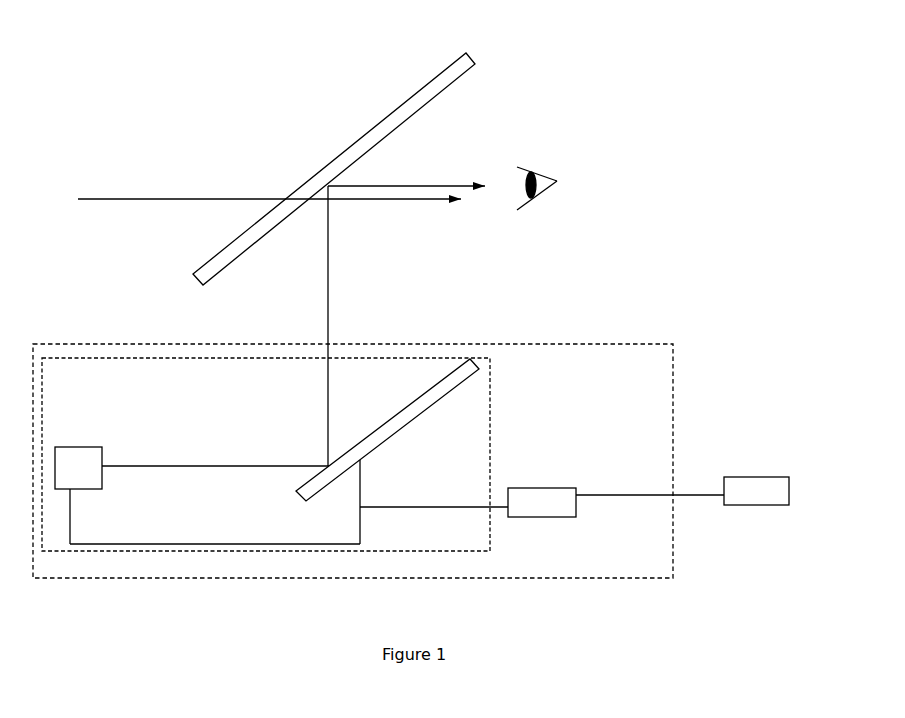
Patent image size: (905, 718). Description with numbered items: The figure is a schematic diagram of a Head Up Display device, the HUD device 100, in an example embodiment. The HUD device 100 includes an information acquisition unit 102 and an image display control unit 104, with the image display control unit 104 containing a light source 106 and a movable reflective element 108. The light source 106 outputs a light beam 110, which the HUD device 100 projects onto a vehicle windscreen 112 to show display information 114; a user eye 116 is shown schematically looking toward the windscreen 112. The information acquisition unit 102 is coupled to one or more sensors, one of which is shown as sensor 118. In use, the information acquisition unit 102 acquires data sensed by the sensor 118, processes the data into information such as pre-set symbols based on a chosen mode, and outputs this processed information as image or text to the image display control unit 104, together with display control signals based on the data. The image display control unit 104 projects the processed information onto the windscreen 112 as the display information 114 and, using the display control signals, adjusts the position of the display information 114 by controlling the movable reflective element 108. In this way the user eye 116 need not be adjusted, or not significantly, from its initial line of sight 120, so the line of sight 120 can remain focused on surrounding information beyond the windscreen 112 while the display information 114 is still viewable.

The HUD device 100 is at (642, 566).
The information acquisition unit 102 is at (567, 493).
The image display control unit 104 is at (476, 421).
The light source 106 is at (70, 472).
The movable reflective element 108 is at (402, 418).
The light beam 110 is at (207, 469).
The vehicle windscreen 112 is at (205, 277).
The display information 114 is at (423, 182).
The user eye 116 is at (542, 168).
The sensor 118 is at (755, 482).
The line of sight 120 is at (113, 198).